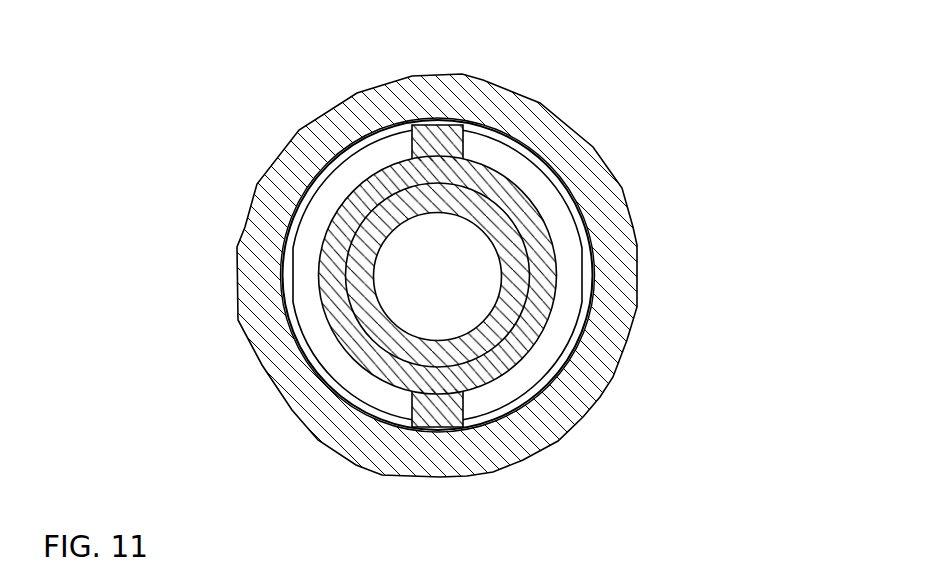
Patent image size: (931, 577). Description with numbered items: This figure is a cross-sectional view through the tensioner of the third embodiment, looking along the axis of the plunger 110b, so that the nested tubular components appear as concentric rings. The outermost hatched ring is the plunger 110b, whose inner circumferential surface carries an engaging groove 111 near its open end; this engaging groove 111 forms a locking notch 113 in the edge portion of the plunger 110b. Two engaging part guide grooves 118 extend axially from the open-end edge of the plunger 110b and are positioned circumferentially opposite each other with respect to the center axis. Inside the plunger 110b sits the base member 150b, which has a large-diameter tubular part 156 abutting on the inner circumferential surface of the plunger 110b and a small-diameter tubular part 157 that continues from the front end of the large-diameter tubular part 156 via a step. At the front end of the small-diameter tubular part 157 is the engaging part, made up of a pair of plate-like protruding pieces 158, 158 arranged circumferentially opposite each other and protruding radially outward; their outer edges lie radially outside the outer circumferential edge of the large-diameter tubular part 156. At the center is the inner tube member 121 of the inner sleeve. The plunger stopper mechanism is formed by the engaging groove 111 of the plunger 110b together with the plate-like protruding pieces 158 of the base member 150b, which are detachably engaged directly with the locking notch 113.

The engaging groove 111 is at (508, 283).
The plunger 110b is at (613, 377).
The locking notch 113 is at (540, 158).
The engaging part guide groove 118 is at (360, 145).
The inner tube member 121 is at (527, 250).
The base member 150b is at (390, 264).
The large-diameter tubular part 156 is at (305, 302).
The small-diameter tubular part 157 is at (379, 286).
The plate-like protruding piece 158 is at (465, 128).